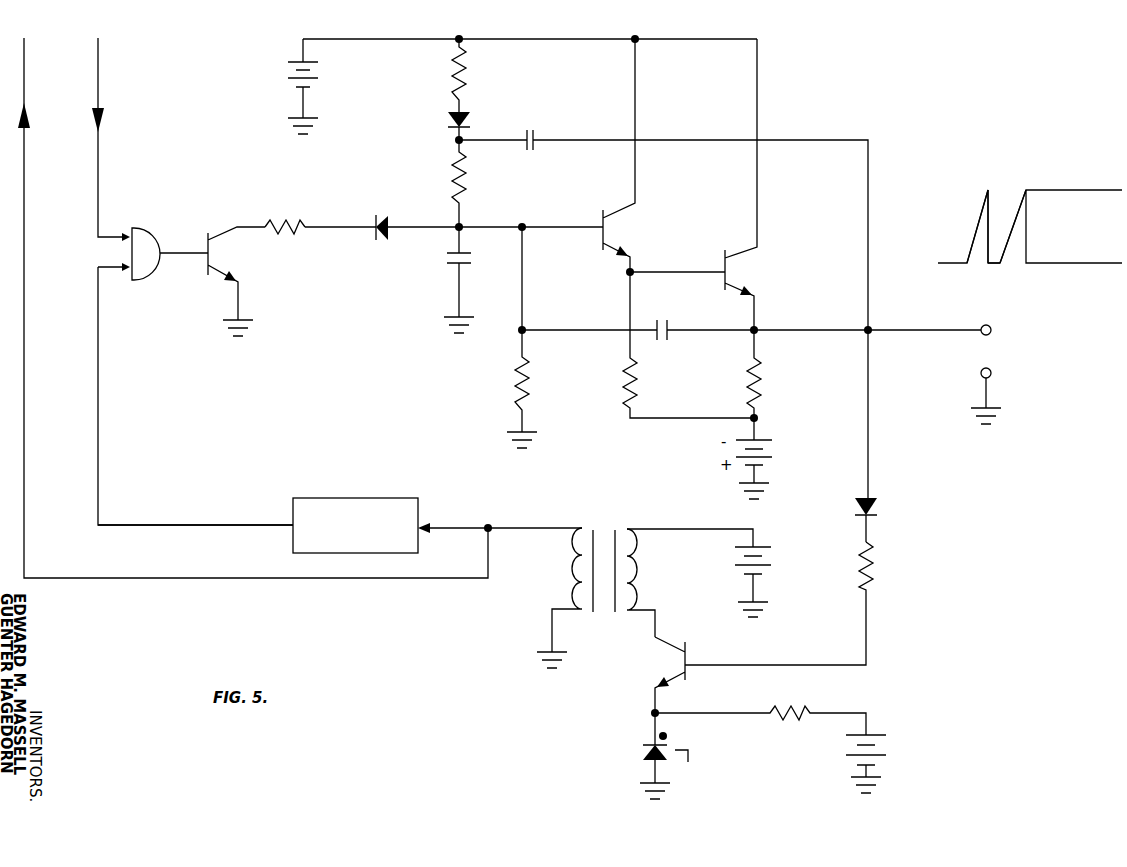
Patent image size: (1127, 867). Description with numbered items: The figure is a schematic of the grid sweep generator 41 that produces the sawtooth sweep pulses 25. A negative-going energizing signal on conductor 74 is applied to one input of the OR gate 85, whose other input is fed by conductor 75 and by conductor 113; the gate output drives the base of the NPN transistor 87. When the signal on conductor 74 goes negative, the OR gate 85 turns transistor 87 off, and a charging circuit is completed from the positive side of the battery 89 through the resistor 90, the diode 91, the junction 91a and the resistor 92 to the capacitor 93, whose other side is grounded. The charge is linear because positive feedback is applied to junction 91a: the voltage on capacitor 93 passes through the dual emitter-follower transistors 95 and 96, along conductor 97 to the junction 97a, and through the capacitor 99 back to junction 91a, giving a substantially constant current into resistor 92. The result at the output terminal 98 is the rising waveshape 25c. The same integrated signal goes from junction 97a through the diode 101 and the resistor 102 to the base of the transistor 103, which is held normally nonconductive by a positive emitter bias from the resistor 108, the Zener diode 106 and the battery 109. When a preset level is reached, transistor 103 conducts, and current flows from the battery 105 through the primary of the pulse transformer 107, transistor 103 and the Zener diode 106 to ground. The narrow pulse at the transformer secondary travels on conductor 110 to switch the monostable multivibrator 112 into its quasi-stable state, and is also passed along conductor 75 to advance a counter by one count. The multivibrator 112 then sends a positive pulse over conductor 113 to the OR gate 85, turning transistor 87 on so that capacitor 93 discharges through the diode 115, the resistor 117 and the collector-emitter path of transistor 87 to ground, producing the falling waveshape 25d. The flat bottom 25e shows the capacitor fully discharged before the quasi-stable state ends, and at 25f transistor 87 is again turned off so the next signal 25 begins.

The conductor 74 is at (98, 158).
The conductor 75 is at (25, 158).
The OR gate 85 is at (160, 233).
The NPN transistor 87 is at (212, 254).
The battery 89 is at (325, 70).
The resistor 90 is at (470, 68).
The diode 91 is at (467, 118).
The junction 91a is at (455, 138).
The resistor 92 is at (470, 175).
The capacitor 93 is at (470, 265).
The emitter-follower transistor 95 is at (603, 222).
The emitter-follower transistor 96 is at (723, 265).
The conductor 97 is at (787, 327).
The junction 97a is at (875, 328).
The output terminal 98 is at (991, 332).
The capacitor 99 is at (537, 140).
The diode 101 is at (880, 511).
The resistor 102 is at (880, 571).
The transistor 103 is at (688, 656).
The battery 105 is at (758, 546).
The Zener diode 106 is at (640, 750).
The pulse transformer 107 is at (603, 528).
The resistor 108 is at (789, 725).
The battery 109 is at (868, 735).
The conductor 110 is at (518, 528).
The monostable multivibrator 112 is at (358, 498).
The conductor 113 is at (200, 525).
The diode 115 is at (413, 245).
The resistor 117 is at (285, 225).
The sawtooth generator circuit 41 is at (866, 68).
The sweep pulses 25 is at (1080, 177).
The rising waveshape 25c is at (970, 246).
The falling waveshape 25d is at (989, 212).
The bottom portion of the sawtooth waveform 25e is at (988, 265).
The waveform point 25f is at (1000, 264).